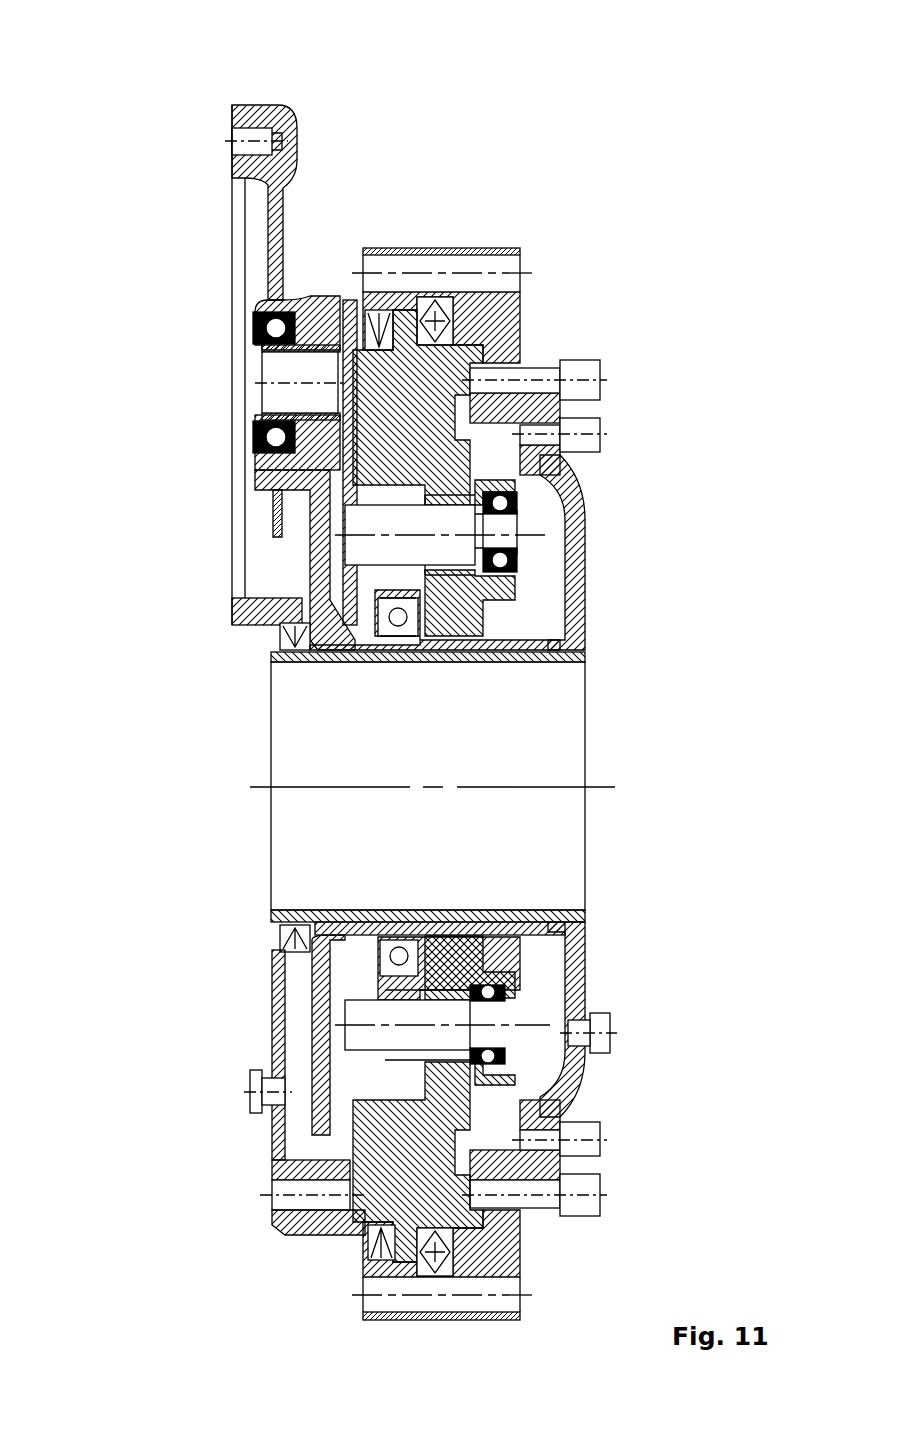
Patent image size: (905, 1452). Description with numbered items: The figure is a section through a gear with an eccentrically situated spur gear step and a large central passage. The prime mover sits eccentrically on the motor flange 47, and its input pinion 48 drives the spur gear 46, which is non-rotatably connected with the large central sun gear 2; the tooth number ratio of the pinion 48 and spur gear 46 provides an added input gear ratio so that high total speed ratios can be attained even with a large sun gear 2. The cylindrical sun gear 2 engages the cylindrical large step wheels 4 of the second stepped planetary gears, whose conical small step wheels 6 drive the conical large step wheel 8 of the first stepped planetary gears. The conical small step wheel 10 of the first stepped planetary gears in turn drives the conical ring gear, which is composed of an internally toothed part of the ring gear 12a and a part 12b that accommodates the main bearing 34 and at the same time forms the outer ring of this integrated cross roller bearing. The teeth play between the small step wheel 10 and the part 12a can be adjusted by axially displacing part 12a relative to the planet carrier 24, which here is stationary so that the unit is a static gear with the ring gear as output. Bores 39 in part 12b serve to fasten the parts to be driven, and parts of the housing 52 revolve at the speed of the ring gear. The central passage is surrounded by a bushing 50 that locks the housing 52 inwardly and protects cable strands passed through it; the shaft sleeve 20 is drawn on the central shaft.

The sun gear 2 is at (545, 930).
The shaft sleeve 20 is at (428, 787).
The large step wheels of the second stepped planetary gears 4 is at (550, 1110).
The small step wheels of the second stepped planetary gears 6 is at (350, 1002).
The large step wheel of the first stepped planetary gears 8 is at (357, 607).
The small step wheel of the first stepped planetary gears 10 is at (452, 545).
The internally toothed part of the ring gear 12a is at (465, 440).
The part of the ring gear accommodating the main bearing 12b is at (520, 300).
The planet carrier 24 is at (520, 345).
The main bearing 34 is at (455, 307).
The bores 39 is at (402, 262).
The spur gear 46 is at (302, 490).
The motor flange 47 is at (225, 258).
The input pinion 48 is at (315, 340).
The bushing 50 is at (532, 660).
The housing 52 is at (580, 597).